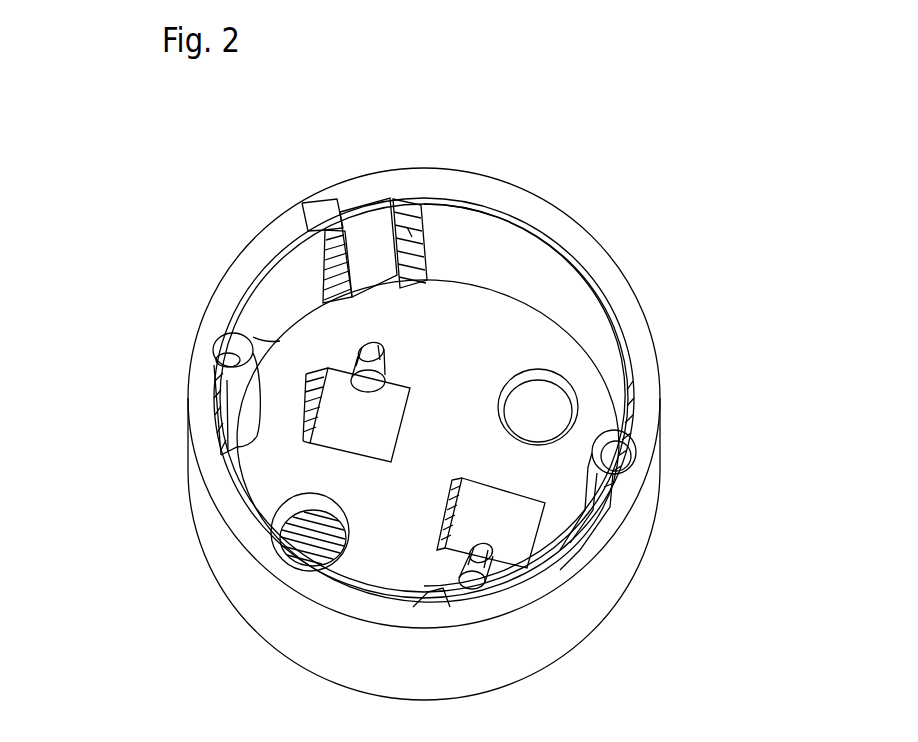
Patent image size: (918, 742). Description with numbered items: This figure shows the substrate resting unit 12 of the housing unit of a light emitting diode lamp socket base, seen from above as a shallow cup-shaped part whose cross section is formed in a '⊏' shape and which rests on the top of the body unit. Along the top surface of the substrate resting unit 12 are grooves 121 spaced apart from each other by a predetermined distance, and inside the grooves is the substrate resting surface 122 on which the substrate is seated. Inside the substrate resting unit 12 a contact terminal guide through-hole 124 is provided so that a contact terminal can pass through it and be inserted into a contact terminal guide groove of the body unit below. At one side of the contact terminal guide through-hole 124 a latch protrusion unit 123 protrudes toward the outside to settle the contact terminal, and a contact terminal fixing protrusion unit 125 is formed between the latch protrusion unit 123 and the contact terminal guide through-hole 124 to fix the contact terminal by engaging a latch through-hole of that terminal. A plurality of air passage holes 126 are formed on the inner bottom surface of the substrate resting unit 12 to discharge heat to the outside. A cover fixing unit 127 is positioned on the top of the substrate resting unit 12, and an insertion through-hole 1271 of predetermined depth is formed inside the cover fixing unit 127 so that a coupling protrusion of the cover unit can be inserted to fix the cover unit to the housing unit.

The substrate resting unit 12 is at (700, 388).
The grooves 121 is at (323, 210).
The substrate resting surface 122 is at (520, 220).
The latch protrusion unit 123 is at (389, 196).
The contact terminal guide through-hole 124 is at (497, 520).
The contact terminal fixing protrusion unit 125 is at (487, 573).
The air passage holes 126 is at (540, 407).
The cover fixing unit 127 is at (631, 323).
The insertion through-hole 1271 is at (228, 352).